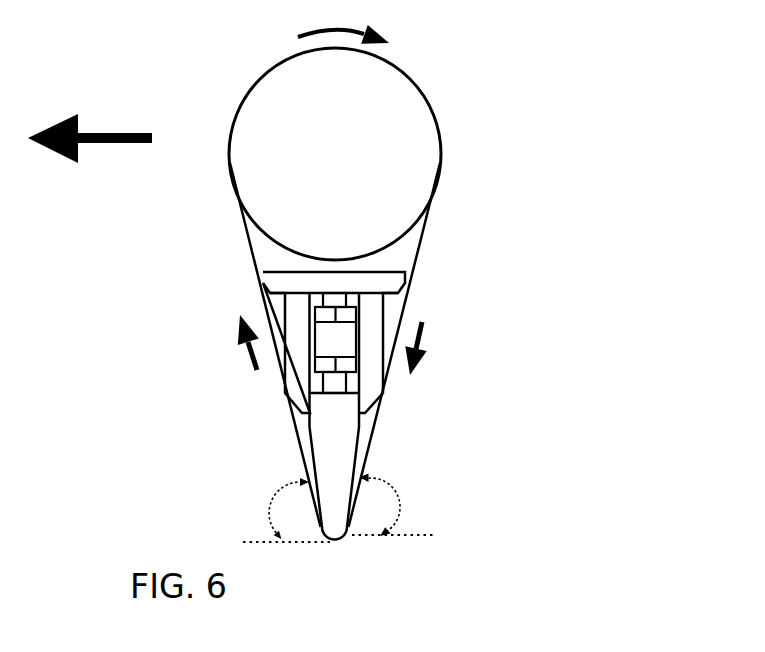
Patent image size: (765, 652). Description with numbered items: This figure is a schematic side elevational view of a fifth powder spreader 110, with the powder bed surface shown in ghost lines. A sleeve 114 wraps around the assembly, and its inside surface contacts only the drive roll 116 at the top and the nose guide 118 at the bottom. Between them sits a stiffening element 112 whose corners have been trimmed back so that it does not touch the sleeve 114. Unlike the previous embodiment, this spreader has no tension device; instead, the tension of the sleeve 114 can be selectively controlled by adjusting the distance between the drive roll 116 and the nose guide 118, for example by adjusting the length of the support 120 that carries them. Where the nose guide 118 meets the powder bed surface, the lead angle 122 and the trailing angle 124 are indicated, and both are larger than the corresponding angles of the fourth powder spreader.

The fifth powder spreader 110 is at (591, 152).
The stiffening element 112 is at (405, 273).
The sleeve 114 is at (252, 247).
The drive roll 116 is at (403, 234).
The nose guide 118 is at (357, 436).
The support 120 is at (353, 328).
The lead angle 122 is at (270, 507).
The trailing angle 124 is at (387, 497).